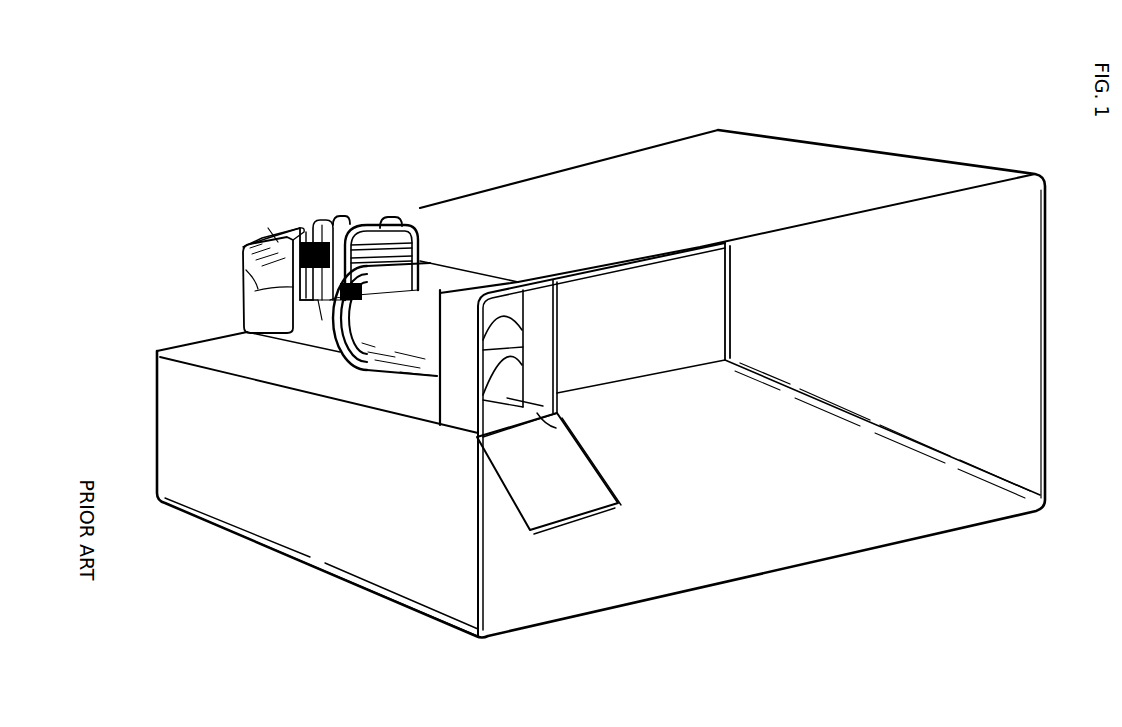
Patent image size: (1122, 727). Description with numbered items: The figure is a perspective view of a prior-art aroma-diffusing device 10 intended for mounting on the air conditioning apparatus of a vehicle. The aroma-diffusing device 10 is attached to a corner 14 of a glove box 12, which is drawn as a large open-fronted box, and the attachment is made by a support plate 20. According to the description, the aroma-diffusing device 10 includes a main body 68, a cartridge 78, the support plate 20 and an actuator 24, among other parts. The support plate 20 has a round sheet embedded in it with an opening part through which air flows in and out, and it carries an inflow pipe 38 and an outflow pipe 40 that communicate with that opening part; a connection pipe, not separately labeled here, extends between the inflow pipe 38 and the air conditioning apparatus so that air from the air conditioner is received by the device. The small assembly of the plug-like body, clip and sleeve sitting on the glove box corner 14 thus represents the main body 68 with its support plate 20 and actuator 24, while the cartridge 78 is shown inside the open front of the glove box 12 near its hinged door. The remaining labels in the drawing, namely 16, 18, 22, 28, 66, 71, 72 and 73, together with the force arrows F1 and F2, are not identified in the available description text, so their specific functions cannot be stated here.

The aroma-diffusing device 10 is at (362, 195).
The glove box 12 is at (848, 128).
The corner 14 is at (246, 309).
The bottom wall 16 is at (270, 495).
The top wall 18 is at (631, 190).
The support plate 20 is at (427, 233).
The latch arms 22 is at (383, 213).
The actuator 24 is at (247, 243).
The latch tab 28 is at (317, 217).
The inflow pipe 38 is at (318, 300).
The outflow pipe 40 is at (320, 320).
The latch leg 66 is at (350, 355).
The main body 68 is at (413, 377).
The flap 71 is at (577, 479).
The hinge 72 is at (548, 418).
The cable boot 73 is at (432, 287).
The cartridge 78 is at (510, 365).
The force F1 is at (246, 270).
The force F2 is at (268, 228).